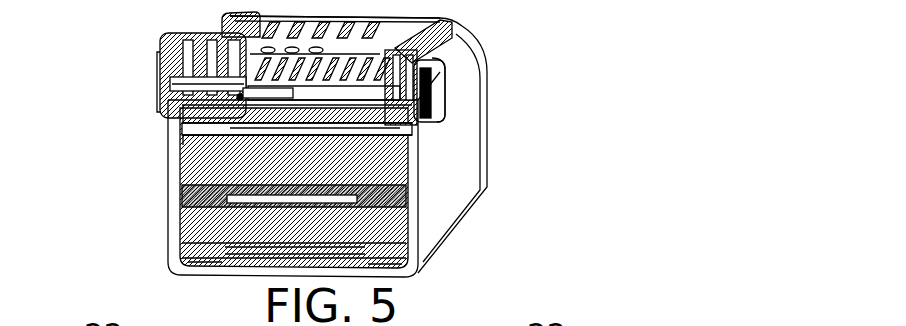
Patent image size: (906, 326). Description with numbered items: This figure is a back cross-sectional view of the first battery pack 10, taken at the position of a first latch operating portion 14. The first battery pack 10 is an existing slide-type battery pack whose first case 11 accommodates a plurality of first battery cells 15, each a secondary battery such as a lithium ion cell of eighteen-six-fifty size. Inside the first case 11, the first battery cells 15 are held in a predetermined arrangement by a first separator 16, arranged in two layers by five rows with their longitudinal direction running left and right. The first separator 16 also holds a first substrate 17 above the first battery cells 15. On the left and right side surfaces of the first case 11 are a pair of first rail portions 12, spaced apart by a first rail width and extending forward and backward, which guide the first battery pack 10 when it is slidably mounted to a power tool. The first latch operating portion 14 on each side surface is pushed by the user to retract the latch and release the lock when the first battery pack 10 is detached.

The first battery pack 10 is at (412, 141).
The first case 11 is at (463, 168).
The first rail portion 12 is at (222, 21).
The first latch operating portion 14 is at (165, 76).
The first battery cell 15 is at (200, 216).
The first separator 16 is at (185, 128).
The first substrate 17 is at (240, 97).